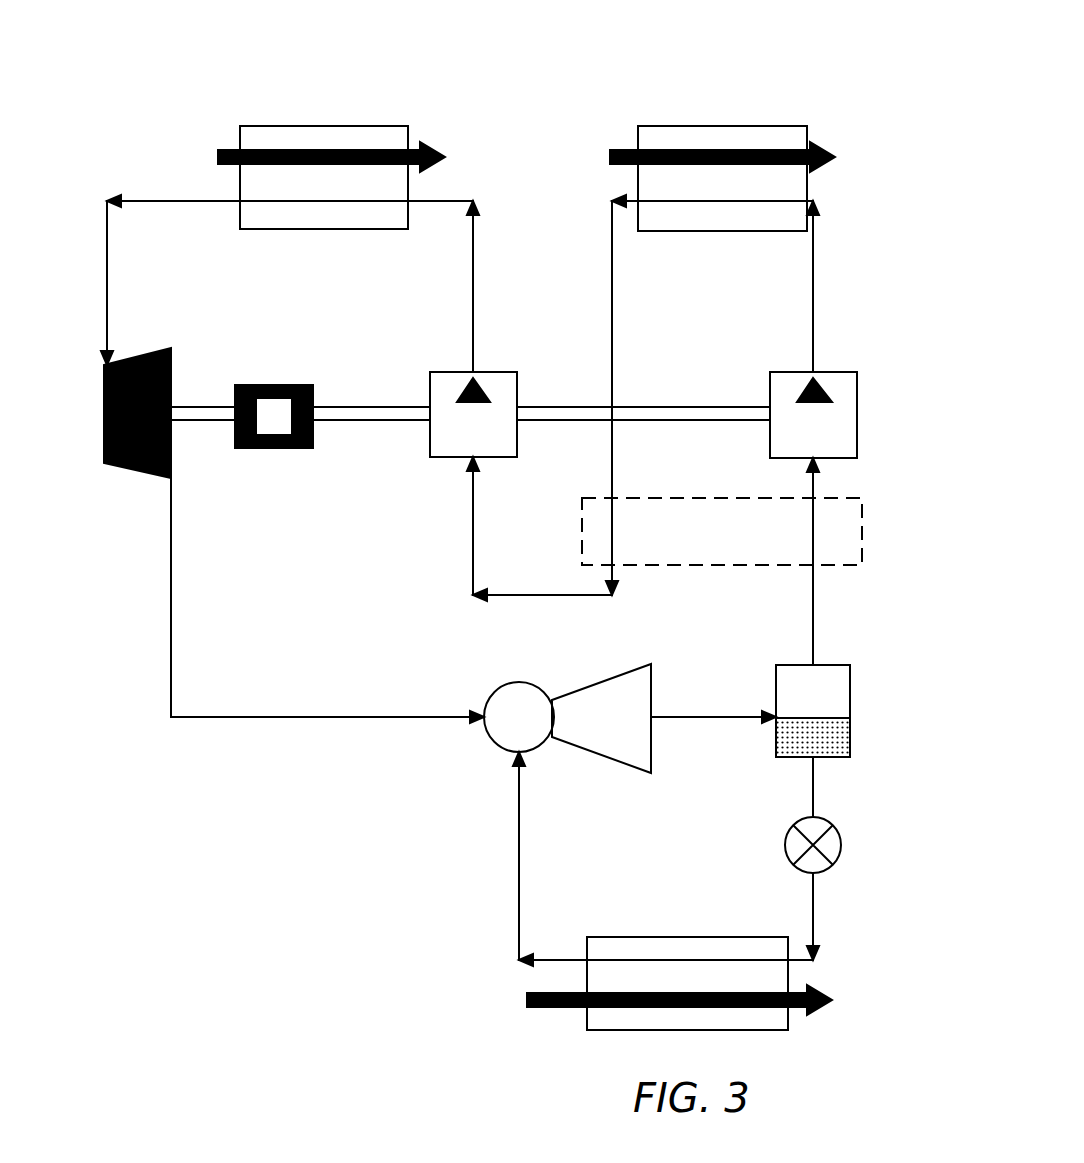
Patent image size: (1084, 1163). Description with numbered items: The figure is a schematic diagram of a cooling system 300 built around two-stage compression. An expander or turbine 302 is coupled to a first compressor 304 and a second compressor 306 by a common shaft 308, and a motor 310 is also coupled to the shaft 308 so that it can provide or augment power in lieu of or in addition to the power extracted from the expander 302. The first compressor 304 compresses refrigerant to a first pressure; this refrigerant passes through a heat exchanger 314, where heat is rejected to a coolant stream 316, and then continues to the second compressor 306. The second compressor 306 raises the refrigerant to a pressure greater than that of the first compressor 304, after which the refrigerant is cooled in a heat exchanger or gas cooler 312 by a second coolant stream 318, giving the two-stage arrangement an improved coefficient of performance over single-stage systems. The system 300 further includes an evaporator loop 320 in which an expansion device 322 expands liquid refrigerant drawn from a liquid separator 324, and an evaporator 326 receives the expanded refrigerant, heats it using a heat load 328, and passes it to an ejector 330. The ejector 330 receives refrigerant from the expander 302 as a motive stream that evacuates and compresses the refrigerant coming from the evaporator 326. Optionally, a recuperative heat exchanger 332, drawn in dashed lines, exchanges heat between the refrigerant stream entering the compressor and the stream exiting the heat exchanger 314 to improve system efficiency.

The cooling system 300 is at (146, 62).
The expander 302 is at (128, 478).
The first compressor 304 is at (648, 399).
The second compressor 306 is at (430, 440).
The shaft 308 is at (668, 405).
The motor 310 is at (275, 385).
The gas cooler 312 is at (274, 125).
The heat exchanger 314 is at (790, 125).
The coolant stream 316 is at (610, 157).
The coolant stream 318 is at (218, 157).
The evaporator loop 320 is at (867, 837).
The expansion device 322 is at (825, 870).
The liquid separator 324 is at (850, 688).
The evaporator 326 is at (765, 1033).
The heat load 328 is at (548, 1008).
The ejector 330 is at (462, 767).
The recuperative heat exchanger 332 is at (862, 530).